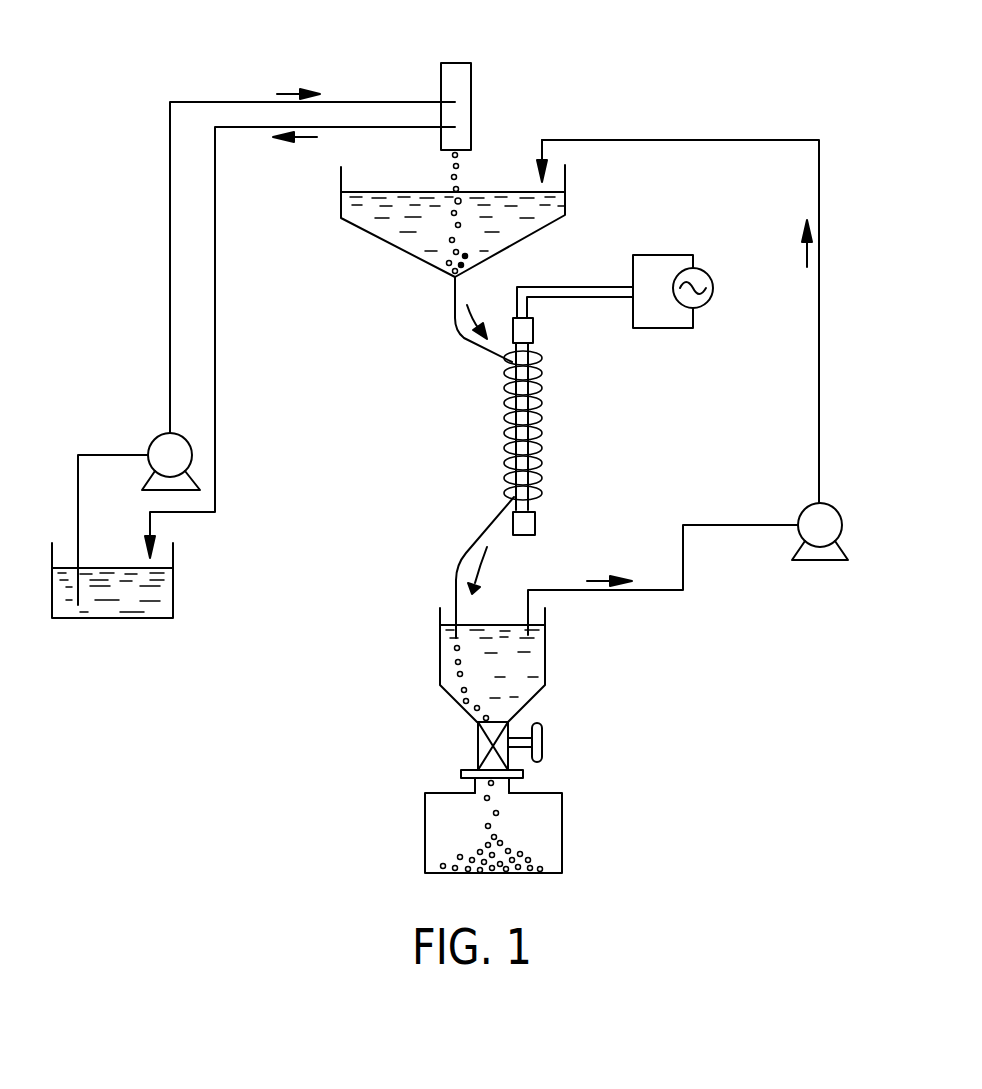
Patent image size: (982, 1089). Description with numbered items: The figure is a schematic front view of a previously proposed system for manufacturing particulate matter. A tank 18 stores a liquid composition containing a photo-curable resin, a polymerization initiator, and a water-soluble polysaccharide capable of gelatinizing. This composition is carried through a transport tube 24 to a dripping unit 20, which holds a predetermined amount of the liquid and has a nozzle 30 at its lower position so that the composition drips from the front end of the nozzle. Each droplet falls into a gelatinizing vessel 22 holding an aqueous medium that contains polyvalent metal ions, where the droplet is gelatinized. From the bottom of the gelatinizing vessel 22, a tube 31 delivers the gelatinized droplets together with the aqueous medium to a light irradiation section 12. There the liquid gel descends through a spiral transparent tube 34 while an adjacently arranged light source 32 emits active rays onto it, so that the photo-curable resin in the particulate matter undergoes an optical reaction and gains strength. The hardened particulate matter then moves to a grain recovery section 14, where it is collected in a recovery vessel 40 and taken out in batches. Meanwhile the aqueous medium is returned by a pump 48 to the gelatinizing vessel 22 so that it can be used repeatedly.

The light irradiation section 12 is at (482, 418).
The grain recovery section 14 is at (414, 770).
The tank 18 is at (173, 587).
The dripping unit 20 is at (471, 72).
The gelatinizing vessel 22 is at (341, 216).
The transport tube 24 is at (170, 342).
The nozzle 30 is at (461, 165).
The tube 31 is at (457, 332).
The light source 32 is at (535, 330).
The spiral transparent tube 34 is at (543, 432).
The recovery vessel 40 is at (425, 830).
The pump 48 is at (828, 527).